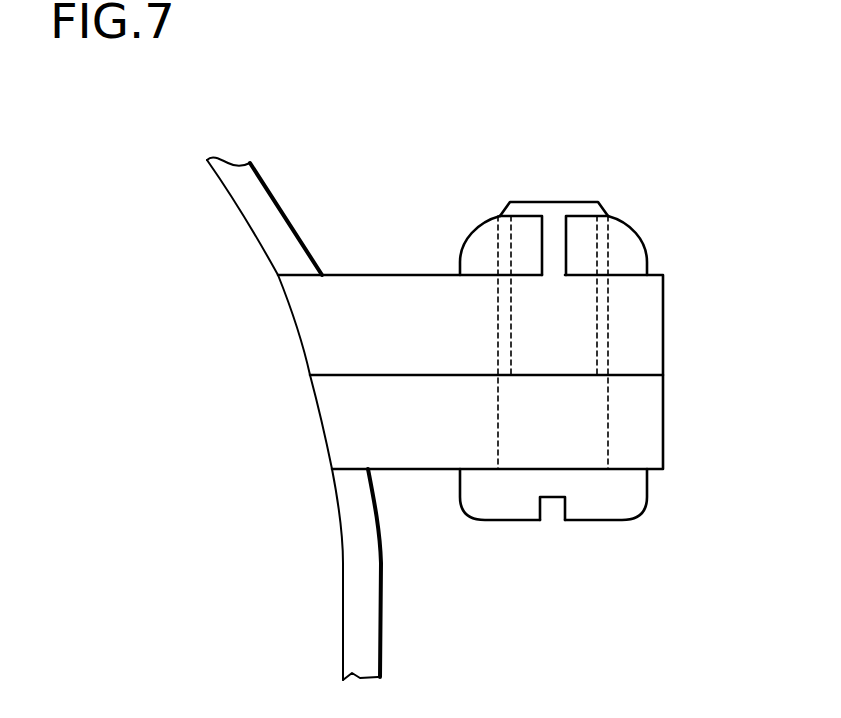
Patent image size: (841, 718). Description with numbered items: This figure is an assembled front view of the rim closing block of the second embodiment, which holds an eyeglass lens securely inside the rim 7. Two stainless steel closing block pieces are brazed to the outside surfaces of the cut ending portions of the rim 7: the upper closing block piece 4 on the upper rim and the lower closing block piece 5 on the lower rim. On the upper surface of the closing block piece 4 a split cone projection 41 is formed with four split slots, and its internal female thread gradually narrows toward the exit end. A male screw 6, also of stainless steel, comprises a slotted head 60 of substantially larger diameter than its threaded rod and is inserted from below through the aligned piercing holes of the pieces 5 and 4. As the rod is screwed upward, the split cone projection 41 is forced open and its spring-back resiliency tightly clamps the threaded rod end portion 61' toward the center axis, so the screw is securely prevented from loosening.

The rim 7 is at (268, 238).
The closing block piece 4 is at (650, 330).
The closing block piece 5 is at (650, 453).
The split cone projection 41 is at (485, 238).
The threaded rod end portion 61' is at (555, 197).
The male screw 6 is at (639, 508).
The slotted head 60 is at (553, 500).